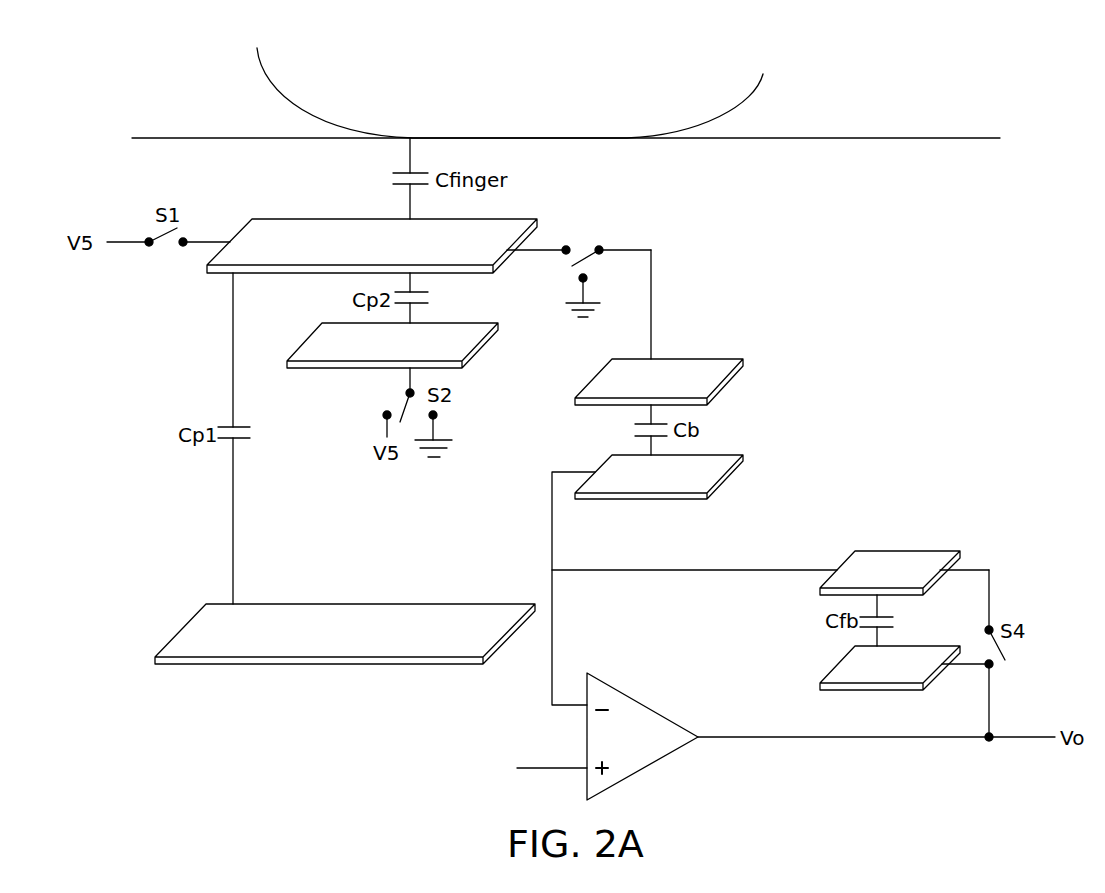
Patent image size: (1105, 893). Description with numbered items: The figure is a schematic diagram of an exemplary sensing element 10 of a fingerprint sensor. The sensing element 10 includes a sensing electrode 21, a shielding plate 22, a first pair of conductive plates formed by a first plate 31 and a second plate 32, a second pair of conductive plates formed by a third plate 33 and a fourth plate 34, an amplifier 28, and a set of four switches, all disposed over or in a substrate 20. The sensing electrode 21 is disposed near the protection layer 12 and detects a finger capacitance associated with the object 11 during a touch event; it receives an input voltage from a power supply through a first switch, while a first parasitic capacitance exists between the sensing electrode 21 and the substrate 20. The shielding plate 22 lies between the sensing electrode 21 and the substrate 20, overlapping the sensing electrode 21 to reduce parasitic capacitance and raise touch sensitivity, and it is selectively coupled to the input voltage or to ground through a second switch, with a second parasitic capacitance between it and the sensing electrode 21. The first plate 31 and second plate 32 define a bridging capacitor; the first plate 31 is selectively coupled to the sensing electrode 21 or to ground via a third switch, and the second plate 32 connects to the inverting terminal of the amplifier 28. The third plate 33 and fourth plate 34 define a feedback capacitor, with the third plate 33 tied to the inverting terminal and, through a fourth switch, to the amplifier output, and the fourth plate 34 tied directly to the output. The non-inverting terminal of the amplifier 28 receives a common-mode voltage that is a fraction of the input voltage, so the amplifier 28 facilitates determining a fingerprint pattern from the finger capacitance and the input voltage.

The sensing element 10 is at (805, 255).
The object 11 is at (758, 87).
The protection layer 12 is at (943, 138).
The substrate 20 is at (181, 626).
The sensing electrode 21 is at (289, 219).
The shielding plate 22 is at (303, 340).
The amplifier 28 is at (648, 749).
The first plate 31 is at (592, 373).
The second plate 32 is at (607, 457).
The third plate 33 is at (850, 553).
The fourth plate 34 is at (840, 662).